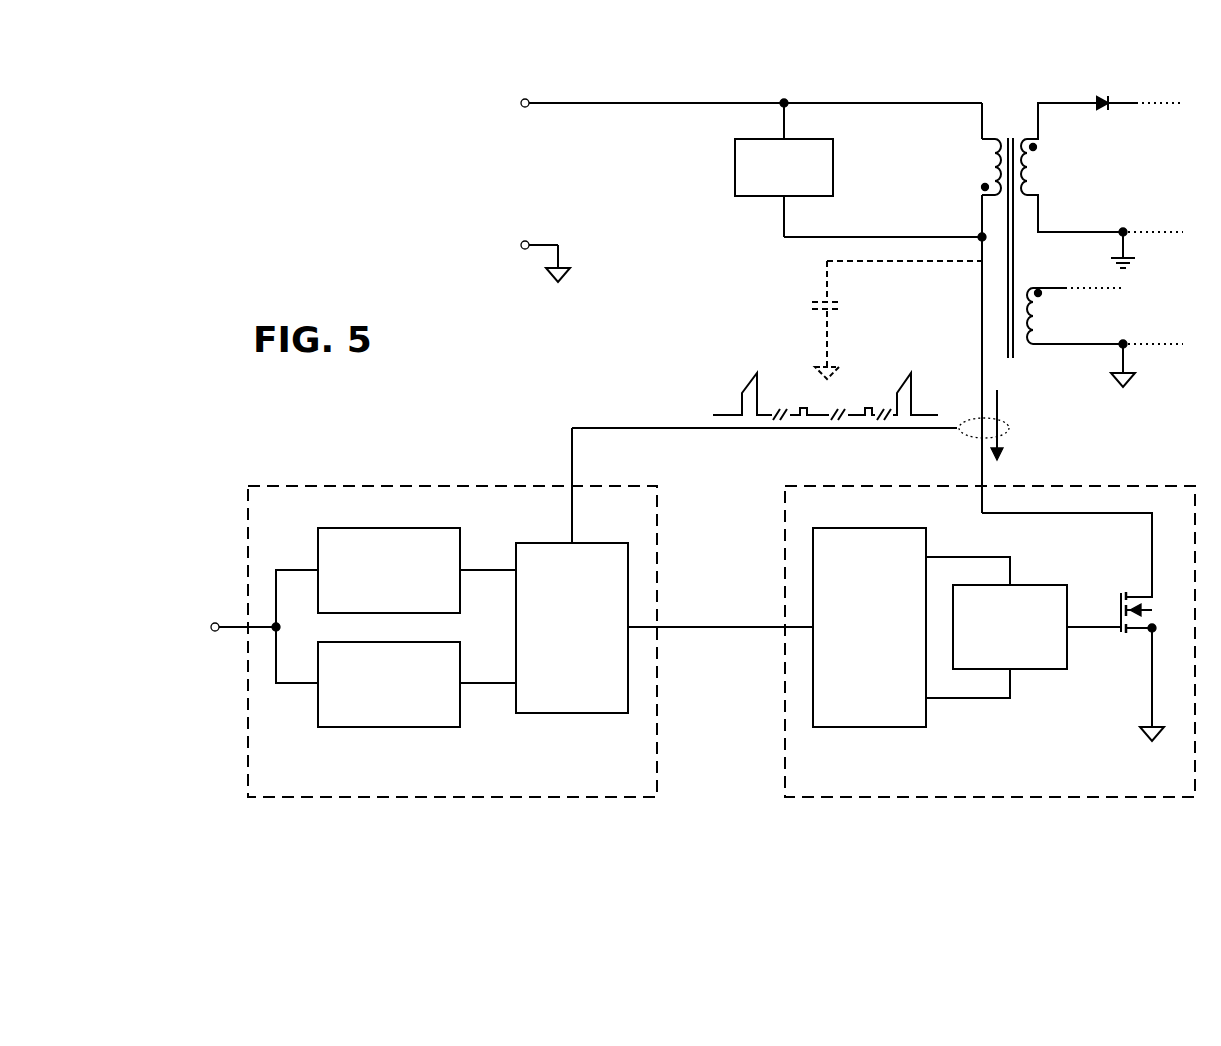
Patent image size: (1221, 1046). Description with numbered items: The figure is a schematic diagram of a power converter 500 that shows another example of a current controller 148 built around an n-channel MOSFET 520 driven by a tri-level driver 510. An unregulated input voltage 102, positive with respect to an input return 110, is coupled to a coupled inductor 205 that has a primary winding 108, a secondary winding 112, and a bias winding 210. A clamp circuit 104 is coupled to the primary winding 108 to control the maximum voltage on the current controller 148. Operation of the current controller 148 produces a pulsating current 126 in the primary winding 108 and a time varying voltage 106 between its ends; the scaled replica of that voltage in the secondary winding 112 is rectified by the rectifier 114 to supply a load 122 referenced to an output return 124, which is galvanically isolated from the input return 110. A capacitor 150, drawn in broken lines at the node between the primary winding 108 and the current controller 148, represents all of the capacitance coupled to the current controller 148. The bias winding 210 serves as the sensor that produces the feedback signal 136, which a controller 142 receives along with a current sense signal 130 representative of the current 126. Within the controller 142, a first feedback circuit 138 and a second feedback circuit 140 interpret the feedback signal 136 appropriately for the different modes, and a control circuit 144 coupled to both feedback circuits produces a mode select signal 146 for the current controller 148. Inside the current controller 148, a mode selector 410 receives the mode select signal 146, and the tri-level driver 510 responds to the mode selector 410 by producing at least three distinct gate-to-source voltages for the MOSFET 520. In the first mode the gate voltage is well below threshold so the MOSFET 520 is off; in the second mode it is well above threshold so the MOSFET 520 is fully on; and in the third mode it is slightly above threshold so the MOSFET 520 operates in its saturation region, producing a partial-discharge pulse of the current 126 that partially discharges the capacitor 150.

The power converter 500 is at (299, 226).
The input voltage VIN 102 is at (548, 183).
The clamp circuit 104 is at (728, 173).
The voltage VP 106 is at (905, 152).
The primary winding 108 is at (985, 172).
The input return 110 is at (570, 271).
The secondary winding 112 is at (1040, 168).
The rectifier D1 114 is at (1105, 120).
The load 122 is at (868, 298).
The output return 124 is at (1137, 265).
The current IP 126 is at (1007, 392).
The current sense signal 130 is at (657, 423).
The feedback signal UFB 136 is at (197, 630).
The first feedback circuit 138 is at (316, 537).
The second feedback circuit 140 is at (340, 732).
The controller 142 is at (660, 772).
The control circuit 144 is at (597, 715).
The mode select signal 146 is at (718, 632).
The current controller 148 is at (785, 763).
The capacitor CP 150 is at (810, 302).
The coupled inductor 205 is at (1017, 260).
The bias winding 210 is at (1037, 320).
The mode selector 410 is at (884, 591).
The tri-level driver 510 is at (1030, 578).
The MOSFET 520 is at (1135, 588).